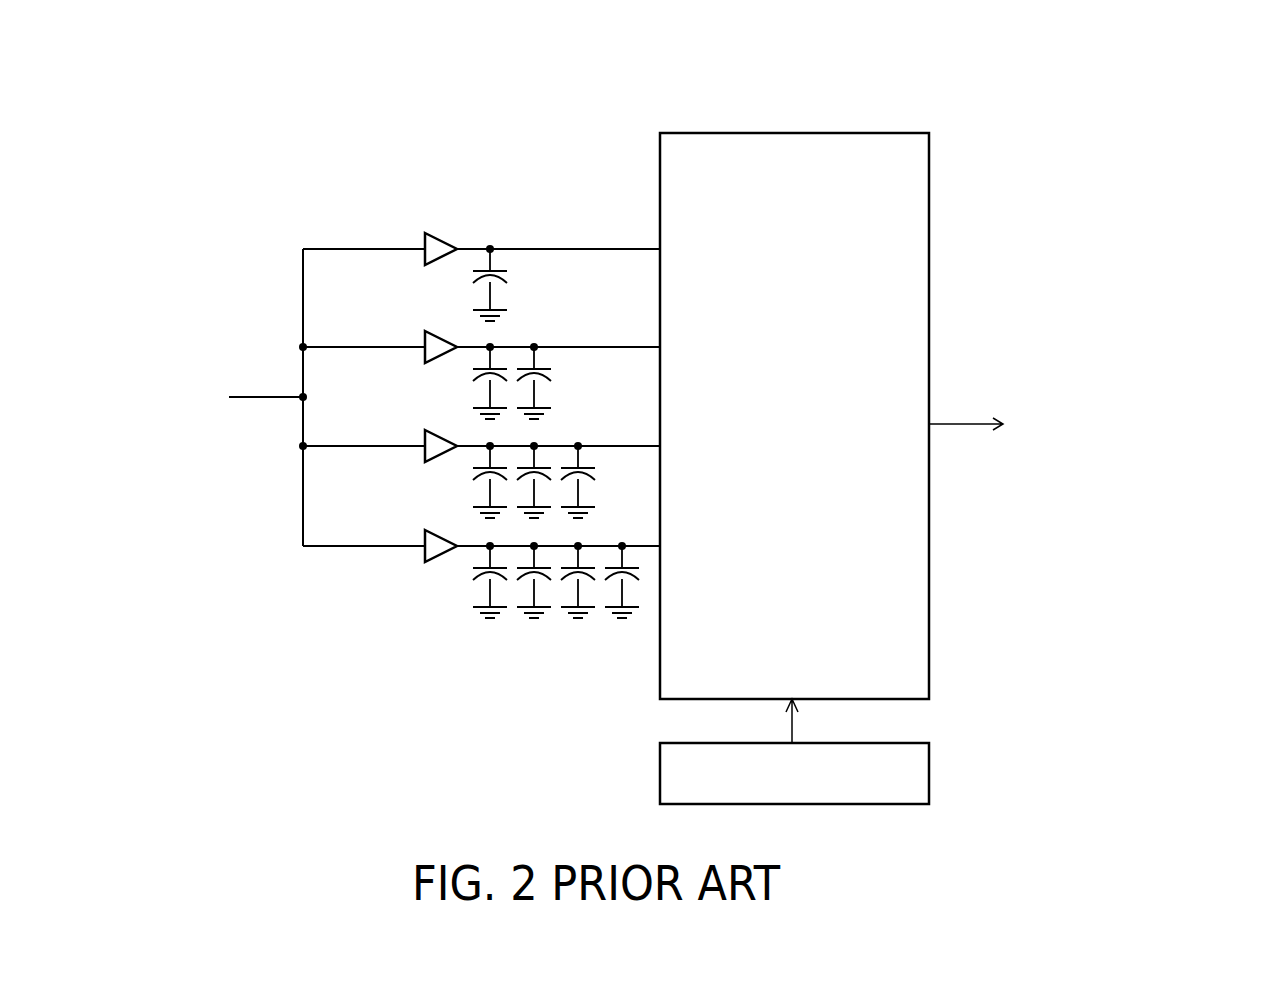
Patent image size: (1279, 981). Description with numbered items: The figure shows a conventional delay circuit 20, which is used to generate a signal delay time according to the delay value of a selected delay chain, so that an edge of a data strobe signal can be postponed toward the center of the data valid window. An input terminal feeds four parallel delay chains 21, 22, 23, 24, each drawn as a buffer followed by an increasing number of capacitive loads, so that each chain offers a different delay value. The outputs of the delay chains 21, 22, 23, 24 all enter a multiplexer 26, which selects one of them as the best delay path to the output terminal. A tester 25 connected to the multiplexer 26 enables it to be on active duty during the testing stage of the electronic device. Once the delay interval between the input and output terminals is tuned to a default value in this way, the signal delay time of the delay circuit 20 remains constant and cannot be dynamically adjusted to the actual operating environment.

The delay circuit 20 is at (1186, 103).
The delay chain 21 is at (361, 249).
The delay chain 22 is at (361, 347).
The delay chain 23 is at (361, 446).
The delay chain 24 is at (361, 546).
The tester 25 is at (929, 770).
The multiplexer 26 is at (929, 192).